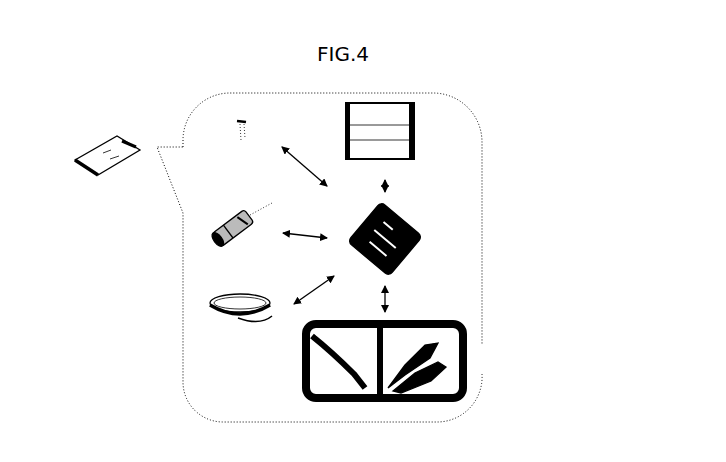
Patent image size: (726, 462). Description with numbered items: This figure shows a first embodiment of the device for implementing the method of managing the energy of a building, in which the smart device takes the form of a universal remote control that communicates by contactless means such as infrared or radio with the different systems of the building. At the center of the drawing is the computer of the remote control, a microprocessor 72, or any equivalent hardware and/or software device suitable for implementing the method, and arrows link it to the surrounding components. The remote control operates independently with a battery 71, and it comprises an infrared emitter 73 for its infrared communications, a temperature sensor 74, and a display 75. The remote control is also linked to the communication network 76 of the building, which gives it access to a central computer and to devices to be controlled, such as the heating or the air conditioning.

The battery 71 is at (203, 316).
The microprocessor 72 is at (408, 213).
The infrared emitter 73 is at (208, 236).
The temperature sensor 74 is at (232, 128).
The display 75 is at (427, 125).
The communication network 76 is at (468, 362).